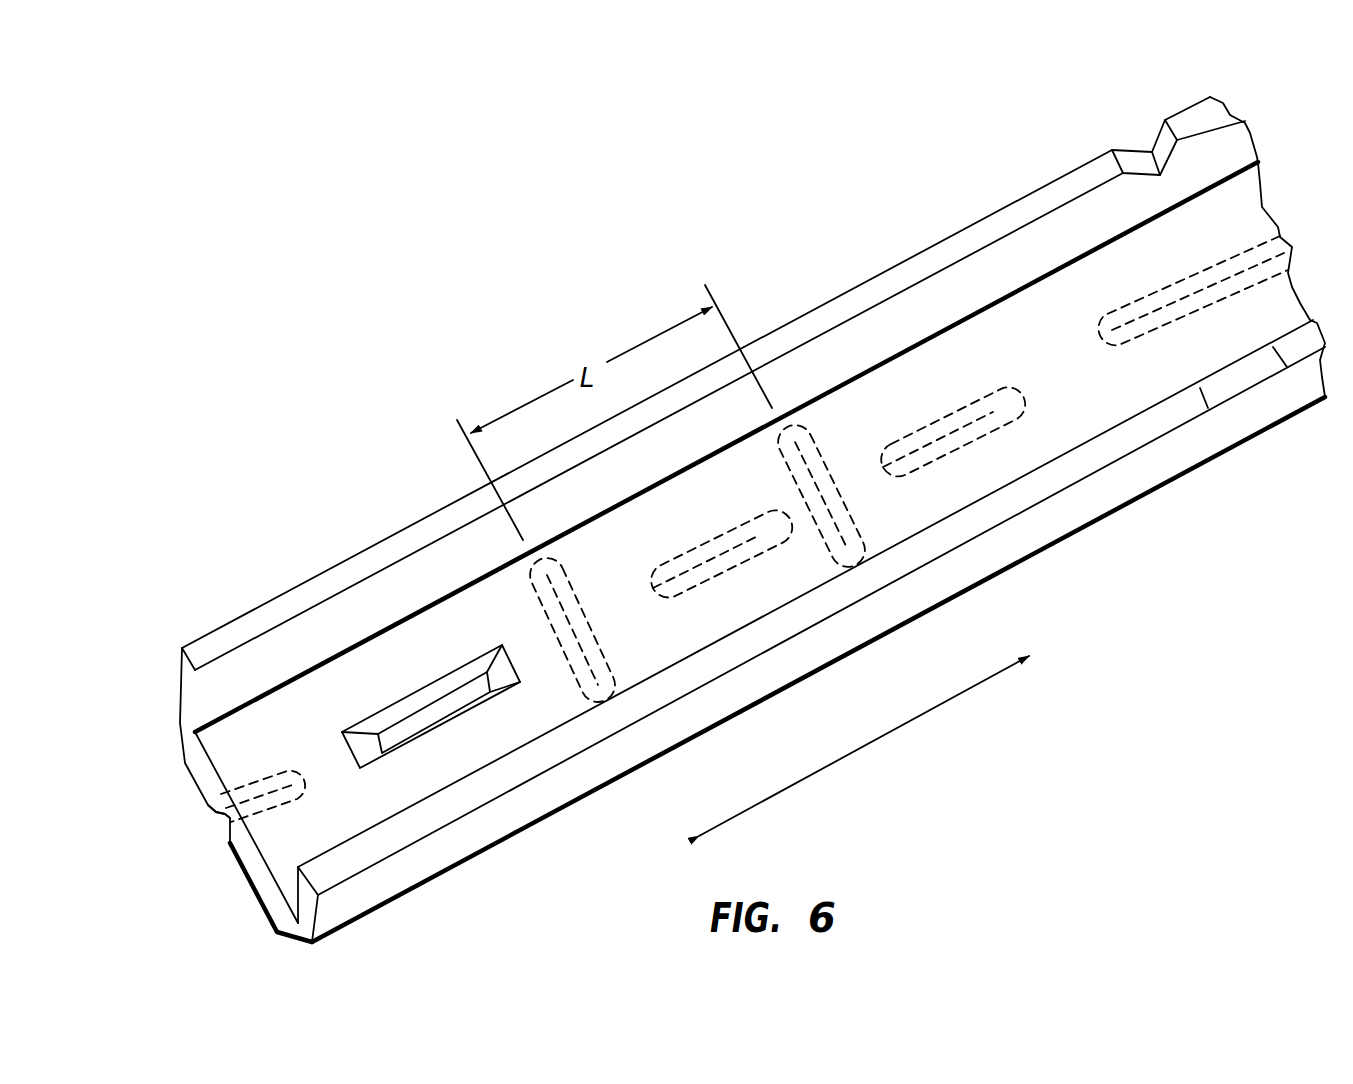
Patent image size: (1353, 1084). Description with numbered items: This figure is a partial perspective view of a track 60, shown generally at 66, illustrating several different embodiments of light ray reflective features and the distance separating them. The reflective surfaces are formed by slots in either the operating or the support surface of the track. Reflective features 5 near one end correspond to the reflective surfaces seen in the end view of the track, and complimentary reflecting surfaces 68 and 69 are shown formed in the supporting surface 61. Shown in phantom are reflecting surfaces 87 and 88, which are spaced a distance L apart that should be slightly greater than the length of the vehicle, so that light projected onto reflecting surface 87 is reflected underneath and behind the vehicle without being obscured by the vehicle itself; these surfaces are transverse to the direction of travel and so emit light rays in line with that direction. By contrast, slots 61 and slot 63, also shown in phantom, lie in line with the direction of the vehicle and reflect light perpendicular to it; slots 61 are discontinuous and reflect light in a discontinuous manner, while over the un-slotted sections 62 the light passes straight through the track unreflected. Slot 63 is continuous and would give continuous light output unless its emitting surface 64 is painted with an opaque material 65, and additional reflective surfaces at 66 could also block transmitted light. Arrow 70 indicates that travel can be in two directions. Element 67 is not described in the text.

The reflective features 5 is at (220, 810).
The track 60 is at (440, 458).
The supporting surface 61 is at (348, 808).
The un-slotted sections 62 is at (627, 638).
The slot 63 is at (1140, 300).
The emitting surface 64 is at (968, 235).
The opaque material 65 is at (1235, 385).
The track 66 is at (1133, 157).
The lower flange 67 is at (455, 802).
The complimentary reflecting surface 68 is at (360, 745).
The complimentary reflecting surface 69 is at (497, 672).
The arrow 70 is at (940, 707).
The reflecting surface 87 is at (523, 583).
The reflecting surface 88 is at (790, 435).